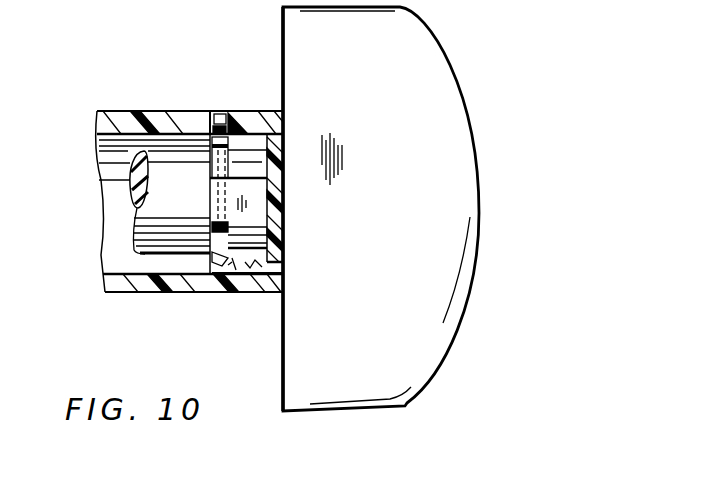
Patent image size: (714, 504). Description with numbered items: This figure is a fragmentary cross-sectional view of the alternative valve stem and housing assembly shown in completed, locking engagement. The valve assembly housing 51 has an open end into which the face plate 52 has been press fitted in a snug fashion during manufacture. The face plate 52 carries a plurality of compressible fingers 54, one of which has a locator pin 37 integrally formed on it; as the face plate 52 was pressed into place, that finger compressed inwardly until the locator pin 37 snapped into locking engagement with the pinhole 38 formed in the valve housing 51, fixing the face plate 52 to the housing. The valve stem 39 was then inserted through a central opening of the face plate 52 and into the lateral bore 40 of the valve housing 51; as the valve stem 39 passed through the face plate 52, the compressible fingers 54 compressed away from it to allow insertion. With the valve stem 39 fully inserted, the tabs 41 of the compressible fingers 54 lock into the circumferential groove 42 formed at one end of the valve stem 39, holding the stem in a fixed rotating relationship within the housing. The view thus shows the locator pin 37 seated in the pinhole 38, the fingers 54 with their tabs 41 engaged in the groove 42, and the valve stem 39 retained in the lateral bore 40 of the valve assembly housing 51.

The locator pin 37 is at (215, 117).
The pinhole 38 is at (221, 126).
The valve stem 39 is at (157, 202).
The lateral bore 40 is at (118, 206).
The tabs 41 is at (213, 157).
The circumferential groove 42 is at (241, 145).
The valve assembly housing 51 is at (130, 283).
The face plate 52 is at (272, 274).
The compressible fingers 54 is at (228, 277).